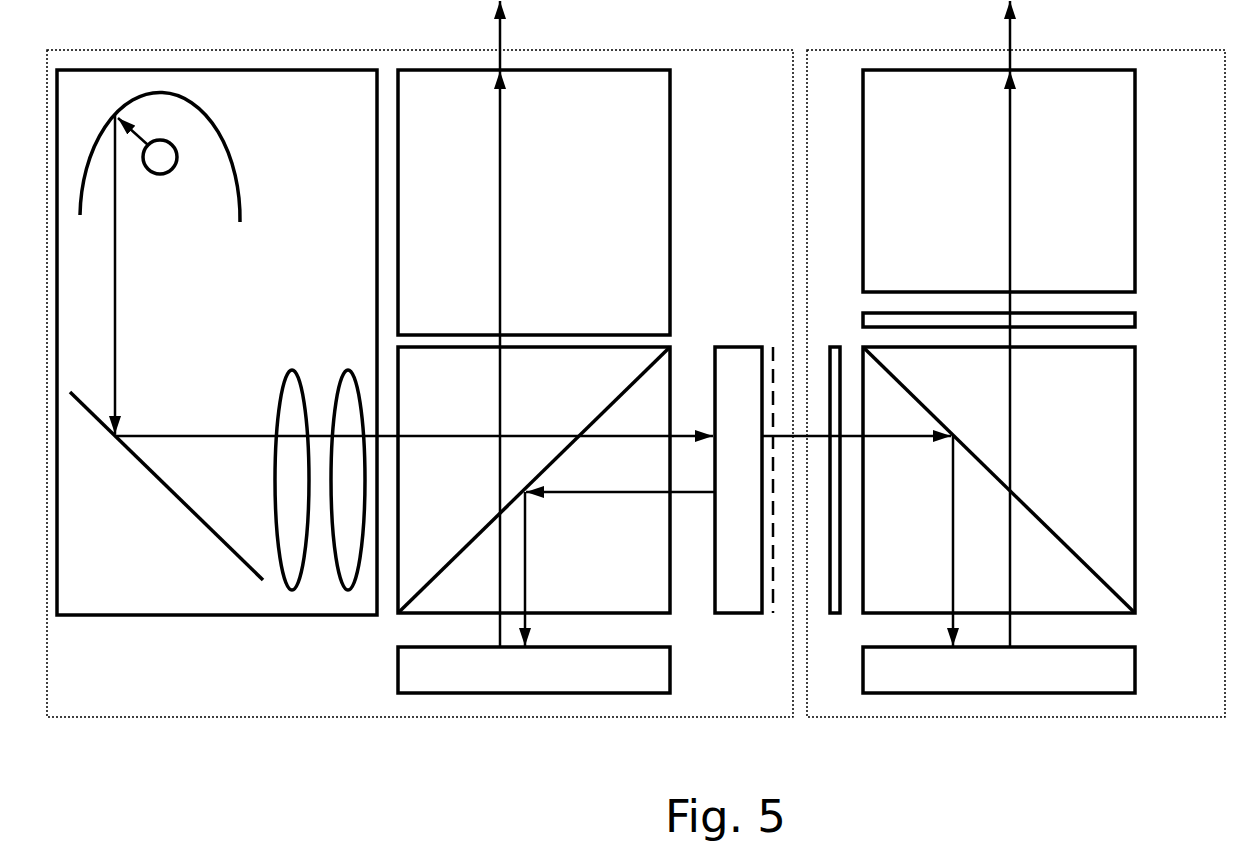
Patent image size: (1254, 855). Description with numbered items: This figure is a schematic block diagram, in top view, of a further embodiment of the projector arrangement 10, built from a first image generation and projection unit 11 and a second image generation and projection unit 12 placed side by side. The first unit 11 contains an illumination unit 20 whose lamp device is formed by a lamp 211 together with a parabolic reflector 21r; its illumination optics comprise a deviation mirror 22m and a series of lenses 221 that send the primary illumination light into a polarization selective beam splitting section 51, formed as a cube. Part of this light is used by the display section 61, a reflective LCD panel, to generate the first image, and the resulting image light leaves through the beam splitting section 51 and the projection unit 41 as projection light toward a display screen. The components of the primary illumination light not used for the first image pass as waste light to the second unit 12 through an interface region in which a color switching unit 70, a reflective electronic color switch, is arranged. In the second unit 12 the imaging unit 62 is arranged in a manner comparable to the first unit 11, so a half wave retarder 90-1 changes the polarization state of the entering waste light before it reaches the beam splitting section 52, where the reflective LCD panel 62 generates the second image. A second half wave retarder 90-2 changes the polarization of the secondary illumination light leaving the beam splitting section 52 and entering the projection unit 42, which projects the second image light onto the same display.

The projection system 10 is at (540, 764).
The first image generation and projection unit 11 is at (262, 716).
The second image generation and projection unit 12 is at (1058, 716).
The illumination unit 20 is at (117, 587).
The parabolic reflector 21r is at (236, 155).
The lamp 211 is at (168, 174).
The deviation mirror 22m is at (134, 457).
The series of lenses 221 is at (348, 368).
The projection unit 41 is at (650, 108).
The projection unit 42 is at (1116, 110).
The beam splitting section 51 is at (655, 602).
The beam splitting section 52 is at (1120, 392).
The display section 61 is at (656, 681).
The imaging unit 62 is at (1114, 681).
The color switching unit 70 is at (751, 389).
The half wave retarder 90-1 is at (837, 347).
The half wave retarder 90-2 is at (1135, 325).